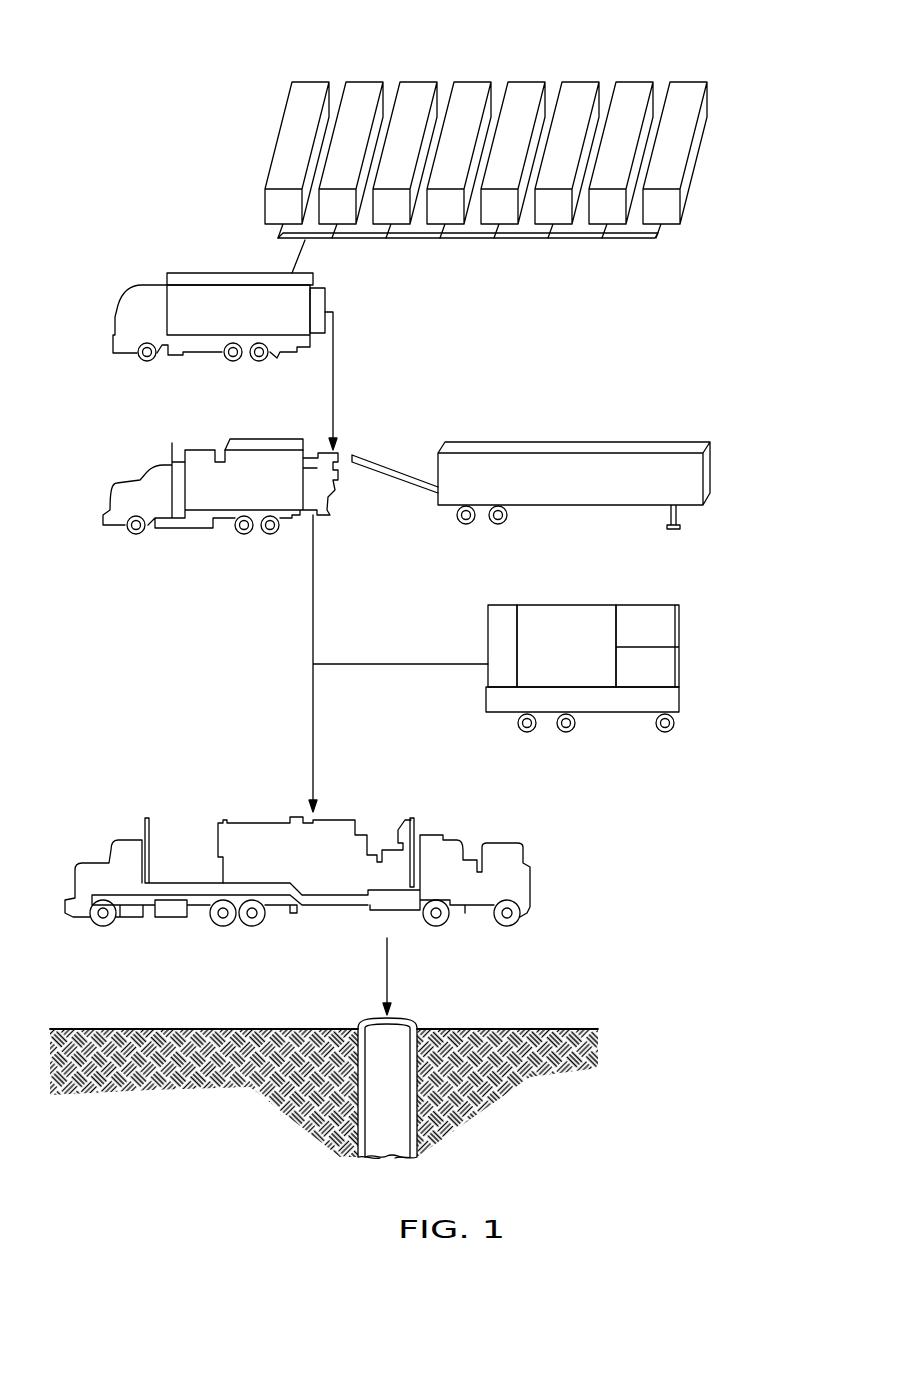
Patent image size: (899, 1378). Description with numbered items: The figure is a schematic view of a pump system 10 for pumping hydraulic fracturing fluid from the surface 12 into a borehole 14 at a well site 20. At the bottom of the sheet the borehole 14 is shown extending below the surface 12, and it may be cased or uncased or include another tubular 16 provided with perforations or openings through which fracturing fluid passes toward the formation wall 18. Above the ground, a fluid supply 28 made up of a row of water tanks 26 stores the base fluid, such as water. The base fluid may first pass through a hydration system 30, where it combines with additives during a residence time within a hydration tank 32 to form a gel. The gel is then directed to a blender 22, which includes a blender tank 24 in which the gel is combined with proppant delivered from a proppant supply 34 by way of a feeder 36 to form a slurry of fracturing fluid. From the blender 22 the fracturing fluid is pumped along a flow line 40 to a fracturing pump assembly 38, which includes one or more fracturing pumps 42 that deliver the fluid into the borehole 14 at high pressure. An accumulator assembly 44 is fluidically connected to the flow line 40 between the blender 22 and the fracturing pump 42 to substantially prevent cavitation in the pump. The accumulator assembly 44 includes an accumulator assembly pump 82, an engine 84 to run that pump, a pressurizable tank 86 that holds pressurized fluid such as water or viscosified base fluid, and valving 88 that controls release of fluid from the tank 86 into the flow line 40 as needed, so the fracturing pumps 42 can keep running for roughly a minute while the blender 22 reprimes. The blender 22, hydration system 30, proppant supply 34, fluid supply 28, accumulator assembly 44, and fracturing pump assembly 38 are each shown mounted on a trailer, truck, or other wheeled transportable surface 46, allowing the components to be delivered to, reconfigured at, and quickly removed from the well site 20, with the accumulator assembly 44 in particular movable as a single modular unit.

The pump system 10 is at (223, 647).
The surface 12 is at (212, 1029).
The borehole 14 is at (380, 1120).
The tubular 16 is at (410, 1125).
The formation wall 18 is at (417, 1090).
The well site 20 is at (140, 721).
The blender 22 is at (220, 509).
The blender tank 24 is at (263, 450).
The water tanks 26 is at (313, 82).
The fluid supply 28 is at (425, 148).
The hydration system 30 is at (324, 305).
The hydration tank 32 is at (240, 282).
The proppant supply 34 is at (577, 442).
The feeder 36 is at (395, 467).
The fracturing pump assembly 38 is at (297, 835).
The flow line 40 is at (313, 722).
The fracturing pump 42 is at (327, 827).
The accumulator assembly 44 is at (551, 648).
The transportable surface 46 is at (147, 361).
The accumulator assembly pump 82 is at (652, 675).
The engine 84 is at (645, 622).
The pressurizable tank 86 is at (572, 665).
The valving 88 is at (500, 623).